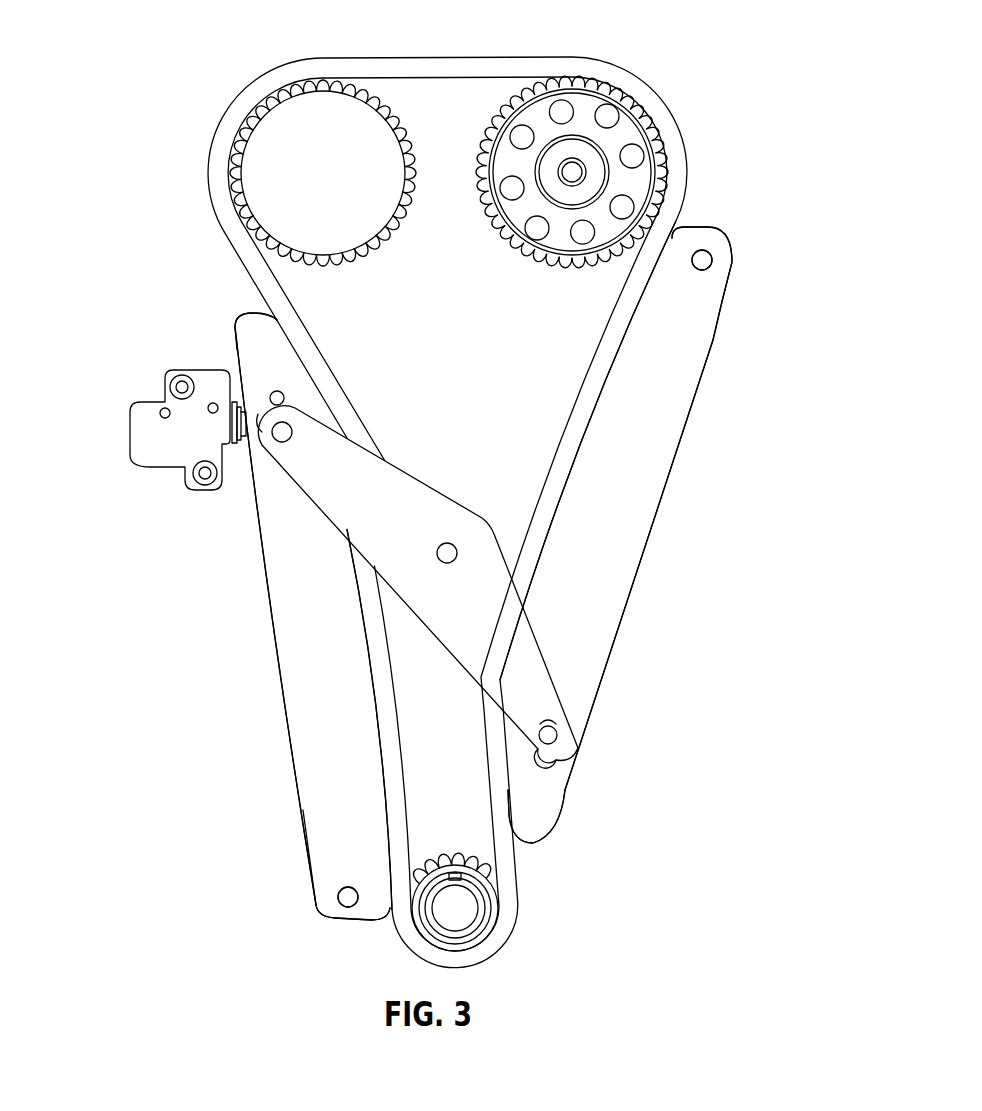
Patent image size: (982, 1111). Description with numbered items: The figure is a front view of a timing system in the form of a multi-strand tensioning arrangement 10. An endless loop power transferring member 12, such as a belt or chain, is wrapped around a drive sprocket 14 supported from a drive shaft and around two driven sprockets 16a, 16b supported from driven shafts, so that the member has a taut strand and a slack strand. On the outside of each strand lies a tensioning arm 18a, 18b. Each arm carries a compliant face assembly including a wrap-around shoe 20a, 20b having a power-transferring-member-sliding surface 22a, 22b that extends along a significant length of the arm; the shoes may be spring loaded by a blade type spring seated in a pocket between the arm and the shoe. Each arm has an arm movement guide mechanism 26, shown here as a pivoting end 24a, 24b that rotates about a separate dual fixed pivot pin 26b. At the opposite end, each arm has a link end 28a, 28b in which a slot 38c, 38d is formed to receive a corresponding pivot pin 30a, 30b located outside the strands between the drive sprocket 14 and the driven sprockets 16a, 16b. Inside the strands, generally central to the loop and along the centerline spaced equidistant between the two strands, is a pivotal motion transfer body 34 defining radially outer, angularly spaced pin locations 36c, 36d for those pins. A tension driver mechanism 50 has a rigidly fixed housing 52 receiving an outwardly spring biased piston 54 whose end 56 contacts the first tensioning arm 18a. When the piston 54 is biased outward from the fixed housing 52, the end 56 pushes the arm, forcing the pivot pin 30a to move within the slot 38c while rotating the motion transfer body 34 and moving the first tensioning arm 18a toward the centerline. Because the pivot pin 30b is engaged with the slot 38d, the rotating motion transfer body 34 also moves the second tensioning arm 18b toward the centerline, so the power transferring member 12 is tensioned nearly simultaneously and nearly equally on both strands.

The multi-strand tensioning arrangement 10 is at (229, 54).
The endless loop power transferring member 12 is at (238, 126).
The drive sprocket 14 is at (490, 905).
The driven sprocket 16a is at (272, 148).
The driven sprocket 16b is at (628, 130).
The tensioning arm 18a is at (282, 592).
The tensioning arm 18b is at (647, 552).
The wrap-around shoe 20a is at (346, 540).
The wrap-around shoe 20b is at (630, 320).
The power-transferring-member-sliding surface 22a is at (350, 590).
The power-transferring-member-sliding surface 22b is at (600, 380).
The pivoting end 24a is at (312, 878).
The pivoting end 24b is at (723, 295).
The arm movement guide mechanism 26 is at (347, 908).
The dual fixed pivot pin 26b is at (338, 898).
The link end 28a is at (250, 312).
The link end 28b is at (536, 846).
The pivot pin 30a is at (284, 432).
The pivot pin 30b is at (550, 736).
The pivotal motion transfer body 34 is at (462, 584).
The pin location 36c is at (282, 399).
The pin location 36d is at (548, 725).
The slot 38c is at (262, 420).
The slot 38d is at (548, 766).
The tension driver mechanism 50 is at (161, 418).
The fixed housing 52 is at (129, 418).
The piston 54 is at (245, 448).
The end 56 is at (245, 400).